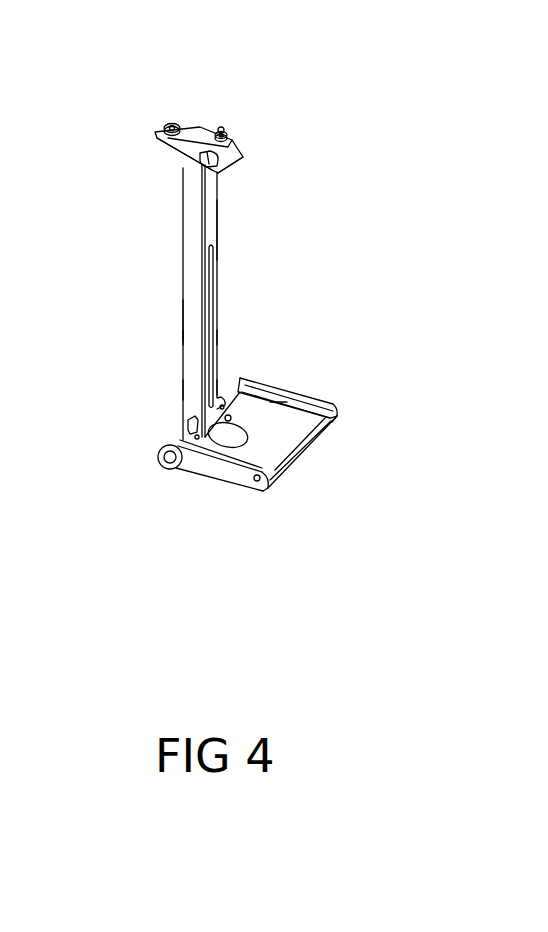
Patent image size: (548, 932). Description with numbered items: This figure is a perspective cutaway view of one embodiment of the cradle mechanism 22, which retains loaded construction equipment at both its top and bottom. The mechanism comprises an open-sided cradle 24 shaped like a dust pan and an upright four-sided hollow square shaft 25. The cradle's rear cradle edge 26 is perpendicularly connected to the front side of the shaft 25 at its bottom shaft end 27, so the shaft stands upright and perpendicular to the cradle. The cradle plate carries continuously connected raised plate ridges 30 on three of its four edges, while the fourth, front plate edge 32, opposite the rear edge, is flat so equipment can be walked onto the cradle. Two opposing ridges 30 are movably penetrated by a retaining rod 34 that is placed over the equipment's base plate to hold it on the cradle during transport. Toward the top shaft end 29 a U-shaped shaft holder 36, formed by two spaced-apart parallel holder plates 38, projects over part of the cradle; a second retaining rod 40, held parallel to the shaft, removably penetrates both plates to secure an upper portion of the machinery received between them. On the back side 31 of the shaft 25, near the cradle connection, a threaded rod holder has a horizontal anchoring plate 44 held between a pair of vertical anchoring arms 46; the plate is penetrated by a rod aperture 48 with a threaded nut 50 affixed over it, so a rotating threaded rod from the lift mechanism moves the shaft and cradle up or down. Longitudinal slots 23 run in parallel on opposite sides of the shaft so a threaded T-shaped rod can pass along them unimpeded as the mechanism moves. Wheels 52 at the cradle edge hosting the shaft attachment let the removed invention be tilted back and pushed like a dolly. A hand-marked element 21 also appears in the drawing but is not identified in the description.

The stand assembly 21 is at (238, 365).
The cradle mechanism 22 is at (232, 337).
The longitudinal slots 23 is at (212, 292).
The open-sided cradle 24 is at (203, 492).
The shaft 25 is at (190, 273).
The rear cradle edge 26 is at (150, 438).
The bottom shaft end 27 is at (163, 420).
The top shaft end 29 is at (222, 232).
The raised plate ridges 30 is at (253, 378).
The back side 31 is at (183, 320).
The front plate edge 32 is at (325, 440).
The retaining rod 34 is at (302, 455).
The shaft holder 36 is at (230, 170).
The holder plates 38 is at (250, 160).
The second retaining rod 40 is at (226, 131).
The anchoring plate 44 is at (160, 128).
The anchoring arms 46 is at (178, 150).
The rod aperture 48 is at (169, 100).
The threaded nut 50 is at (220, 127).
The wheels 52 is at (165, 465).